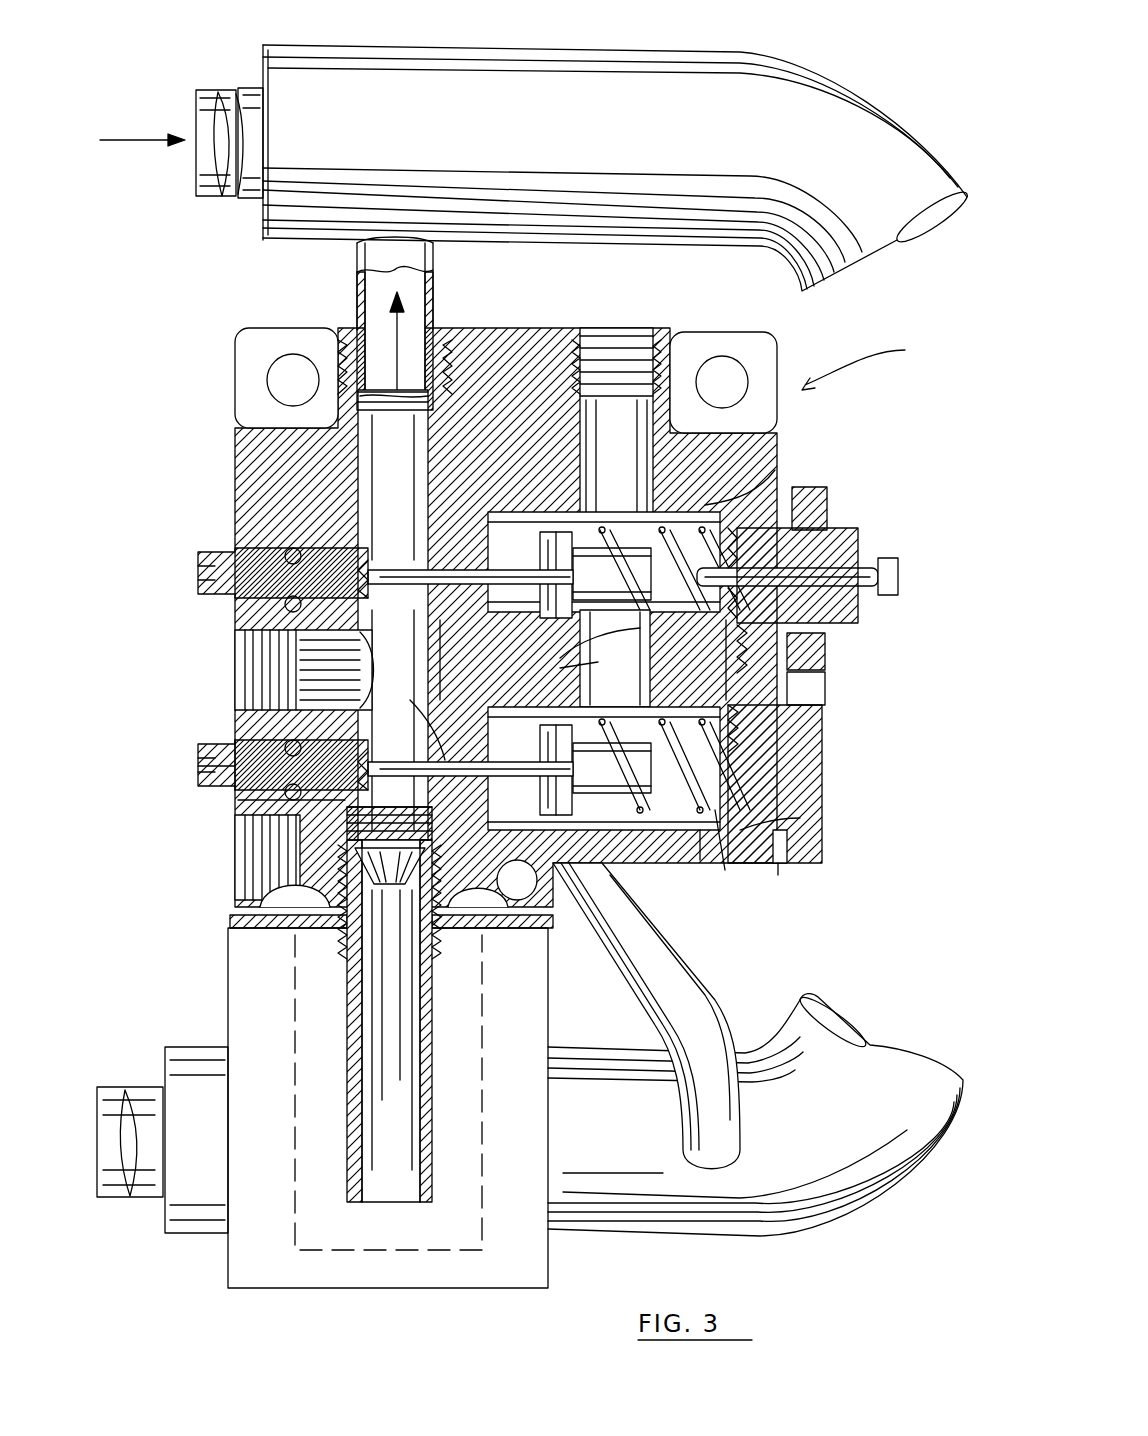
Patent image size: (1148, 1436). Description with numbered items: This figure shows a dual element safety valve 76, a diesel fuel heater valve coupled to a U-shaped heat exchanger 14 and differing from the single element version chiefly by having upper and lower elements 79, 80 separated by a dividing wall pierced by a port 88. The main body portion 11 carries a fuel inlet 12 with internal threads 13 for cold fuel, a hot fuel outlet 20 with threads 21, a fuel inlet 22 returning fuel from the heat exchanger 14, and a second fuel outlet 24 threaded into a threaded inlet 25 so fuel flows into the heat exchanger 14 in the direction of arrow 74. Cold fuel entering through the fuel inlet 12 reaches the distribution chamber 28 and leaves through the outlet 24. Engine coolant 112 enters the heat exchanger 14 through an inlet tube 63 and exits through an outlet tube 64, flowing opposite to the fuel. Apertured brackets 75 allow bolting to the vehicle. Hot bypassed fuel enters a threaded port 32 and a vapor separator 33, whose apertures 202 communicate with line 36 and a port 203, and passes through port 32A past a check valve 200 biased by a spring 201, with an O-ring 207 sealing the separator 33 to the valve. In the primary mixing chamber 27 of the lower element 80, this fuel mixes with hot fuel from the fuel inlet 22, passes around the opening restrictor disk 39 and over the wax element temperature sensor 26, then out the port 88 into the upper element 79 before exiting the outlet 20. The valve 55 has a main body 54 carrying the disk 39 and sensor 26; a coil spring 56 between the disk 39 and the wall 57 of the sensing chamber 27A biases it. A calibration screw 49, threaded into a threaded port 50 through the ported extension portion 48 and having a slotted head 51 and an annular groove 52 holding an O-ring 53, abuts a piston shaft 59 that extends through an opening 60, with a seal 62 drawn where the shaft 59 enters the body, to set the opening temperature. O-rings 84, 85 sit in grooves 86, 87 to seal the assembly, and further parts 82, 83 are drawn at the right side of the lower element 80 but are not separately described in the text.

The heat exchanger 14 is at (600, 54).
The outlet tube 64 is at (214, 92).
The engine coolant 112 is at (142, 127).
The main body portion 11 is at (768, 460).
The dual element safety valve 76 is at (864, 360).
The apertured bracket 75 is at (770, 350).
The second fuel outlet 24 is at (433, 288).
The threaded inlet 25 is at (446, 335).
The arrow 74 is at (385, 322).
The distribution chamber 28 is at (412, 644).
The hot fuel outlet 20 is at (612, 330).
The threads 21 is at (572, 325).
The O-ring 84 is at (810, 485).
The groove 86 is at (820, 525).
The upper element 79 is at (775, 628).
The plug 82 is at (825, 652).
The vent port 83 is at (825, 690).
The lower element 80 is at (770, 745).
The groove 87 is at (787, 848).
The O-ring 85 is at (778, 875).
The valve 55 is at (600, 680).
The port 88 is at (600, 640).
The main body 54 is at (595, 660).
The primary mixing chamber 27 is at (520, 744).
The wax element temperature sensor 26 is at (630, 777).
The opening restrictor disk 39 is at (570, 730).
The coil spring 56 is at (690, 830).
The wall 57 is at (725, 870).
The sensing chamber 27A is at (700, 860).
The piston shaft 59 is at (395, 762).
The opening 60 is at (414, 723).
The seal 62 is at (372, 780).
The calibration screw 49 is at (198, 760).
The threaded port 50 is at (235, 742).
The slotted head 51 is at (198, 768).
The O-ring 53 is at (285, 752).
The annular groove 52 is at (285, 795).
The ported extension portion 48 is at (240, 805).
The fuel inlet 12 is at (250, 675).
The threads 13 is at (240, 710).
The spring 201 is at (347, 835).
The threaded port 32 is at (240, 883).
The port 203 is at (238, 880).
The O-ring 207 is at (262, 908).
The apertures 202 is at (262, 928).
The check valve 200 is at (360, 920).
The port 32A is at (412, 1191).
The line 36 is at (517, 900).
The vapor separator 33 is at (228, 1272).
The inlet tube 63 is at (120, 1087).
The fuel inlet 22 is at (597, 870).